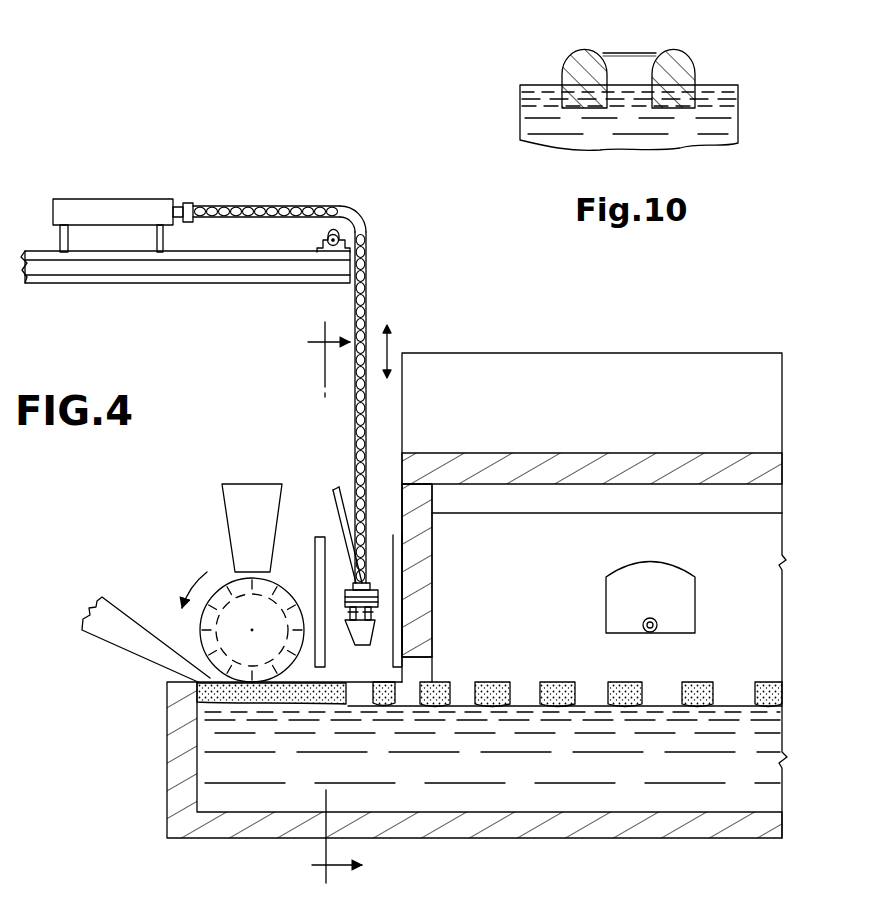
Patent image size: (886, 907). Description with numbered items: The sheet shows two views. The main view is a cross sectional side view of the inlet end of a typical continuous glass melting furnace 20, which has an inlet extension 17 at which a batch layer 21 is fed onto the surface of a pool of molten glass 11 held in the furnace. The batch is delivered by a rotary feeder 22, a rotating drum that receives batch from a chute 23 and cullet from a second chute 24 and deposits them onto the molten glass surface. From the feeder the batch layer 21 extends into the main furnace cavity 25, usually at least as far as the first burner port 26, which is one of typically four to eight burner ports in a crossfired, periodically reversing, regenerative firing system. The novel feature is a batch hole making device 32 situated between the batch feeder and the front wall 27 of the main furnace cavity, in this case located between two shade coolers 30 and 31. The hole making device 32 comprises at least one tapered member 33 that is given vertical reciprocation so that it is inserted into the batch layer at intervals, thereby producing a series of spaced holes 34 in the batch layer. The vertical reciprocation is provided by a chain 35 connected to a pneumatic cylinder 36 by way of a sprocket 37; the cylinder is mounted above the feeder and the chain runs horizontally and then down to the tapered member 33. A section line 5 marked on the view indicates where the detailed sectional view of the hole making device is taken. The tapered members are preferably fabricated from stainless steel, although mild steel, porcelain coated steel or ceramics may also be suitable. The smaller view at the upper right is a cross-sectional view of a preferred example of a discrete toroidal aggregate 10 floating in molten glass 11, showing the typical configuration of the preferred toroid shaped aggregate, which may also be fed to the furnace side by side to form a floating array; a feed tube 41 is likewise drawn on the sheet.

In FIG. 10, the toroidal aggregate 10 is at (690, 56).
In FIG. 4, the molten glass 11 is at (570, 800).
In FIG. 10, the molten glass 11 is at (544, 92).
In FIG. 4, the inlet extension 17 is at (167, 770).
In FIG. 4, the glass melting furnace 20 is at (582, 338).
In FIG. 4, the batch layer 21 is at (215, 700).
In FIG. 4, the rotary feeder 22 is at (219, 582).
In FIG. 4, the batch chute 23 is at (222, 497).
In FIG. 4, the cullet chute 24 is at (118, 600).
In FIG. 4, the main furnace cavity 25 is at (532, 623).
In FIG. 4, the first burner port 26 is at (697, 600).
In FIG. 4, the front wall 27 is at (432, 561).
In FIG. 4, the shade cooler 30 is at (315, 550).
In FIG. 4, the shade cooler 31 is at (393, 538).
In FIG. 4, the batch hole making device 32 is at (338, 468).
In FIG. 4, the tapered member 33 is at (352, 643).
In FIG. 4, the spaced holes 34 is at (523, 695).
In FIG. 4, the chain 35 is at (368, 295).
In FIG. 4, the pneumatic cylinder 36 is at (112, 203).
In FIG. 4, the sprocket 37 is at (317, 218).
In FIG. 4, the feed tube 41 is at (333, 494).
In FIG. 4, the section line 5 is at (323, 603).